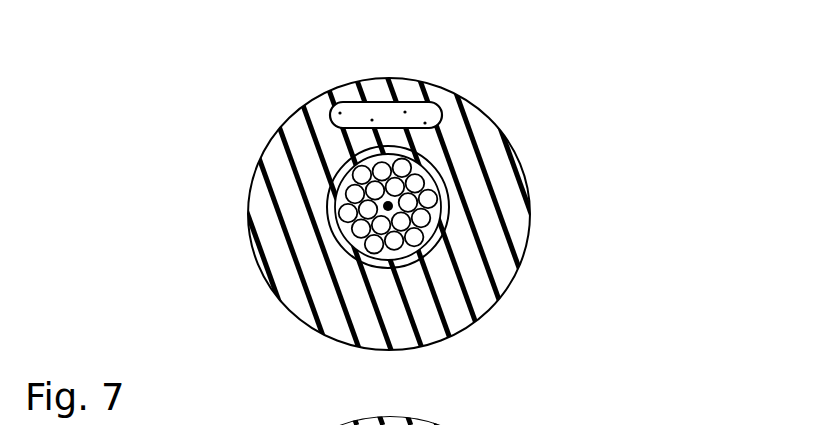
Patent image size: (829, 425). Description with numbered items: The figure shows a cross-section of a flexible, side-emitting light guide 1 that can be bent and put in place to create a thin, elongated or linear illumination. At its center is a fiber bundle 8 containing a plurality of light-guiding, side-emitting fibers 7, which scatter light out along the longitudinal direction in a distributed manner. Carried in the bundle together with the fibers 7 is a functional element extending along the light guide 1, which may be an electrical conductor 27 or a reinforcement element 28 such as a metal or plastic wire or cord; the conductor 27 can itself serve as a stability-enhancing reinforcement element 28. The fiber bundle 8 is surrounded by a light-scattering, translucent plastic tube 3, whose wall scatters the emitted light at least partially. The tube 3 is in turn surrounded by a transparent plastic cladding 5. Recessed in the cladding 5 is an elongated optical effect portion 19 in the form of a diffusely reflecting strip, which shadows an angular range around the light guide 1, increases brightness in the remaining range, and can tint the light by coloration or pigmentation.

The light guide 1 is at (163, 192).
The tube 3 is at (442, 199).
The cladding 5 is at (531, 215).
The side-emitting fiber 7 is at (352, 242).
The fiber bundle 8 is at (386, 209).
The effect portion 19 is at (383, 102).
The electrical conductor 27 is at (403, 197).
The reinforcement element 28 is at (418, 201).